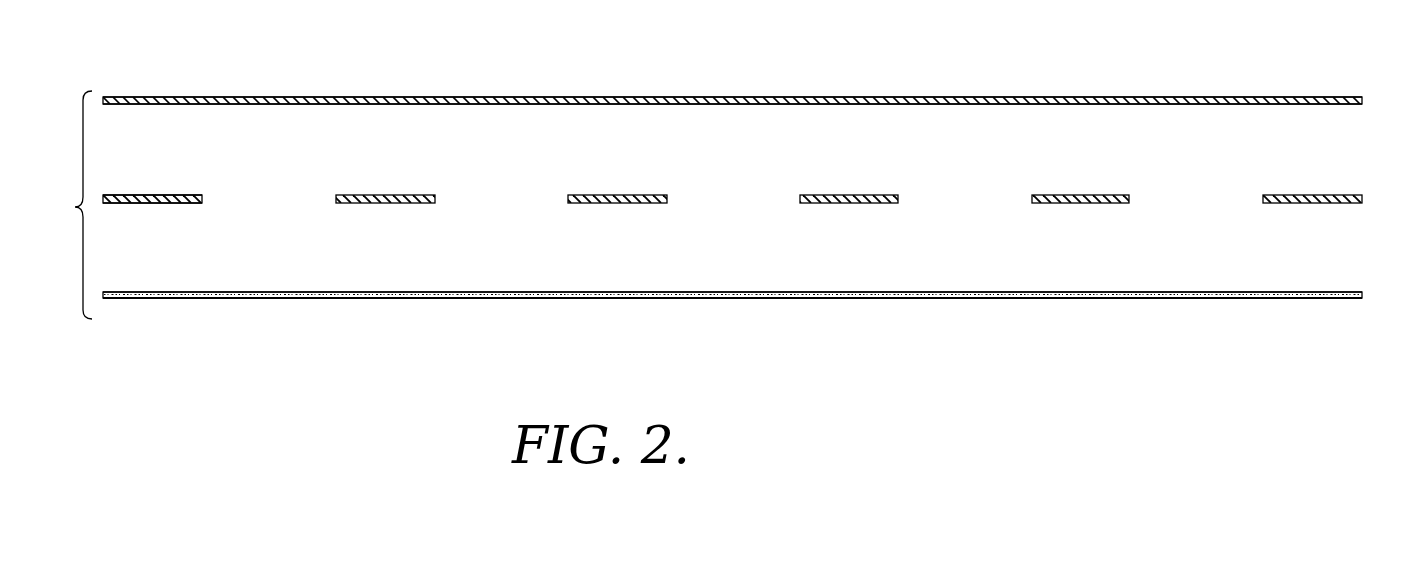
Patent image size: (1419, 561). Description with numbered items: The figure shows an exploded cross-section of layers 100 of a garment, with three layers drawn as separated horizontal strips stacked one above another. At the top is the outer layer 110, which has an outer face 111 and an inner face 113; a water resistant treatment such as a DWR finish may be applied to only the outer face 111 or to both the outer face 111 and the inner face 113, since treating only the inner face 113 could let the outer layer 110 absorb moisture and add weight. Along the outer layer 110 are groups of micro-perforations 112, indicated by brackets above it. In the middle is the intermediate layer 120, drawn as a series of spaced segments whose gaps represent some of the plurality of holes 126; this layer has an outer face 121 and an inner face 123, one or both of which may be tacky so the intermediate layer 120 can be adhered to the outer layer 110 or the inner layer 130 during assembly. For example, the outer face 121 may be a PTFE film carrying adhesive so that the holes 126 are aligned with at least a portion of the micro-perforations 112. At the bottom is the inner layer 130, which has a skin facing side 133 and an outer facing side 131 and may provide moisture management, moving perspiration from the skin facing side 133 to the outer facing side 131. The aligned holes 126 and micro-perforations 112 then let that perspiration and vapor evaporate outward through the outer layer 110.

The cross-section of layers 100 is at (76, 207).
The outer layer 110 is at (1363, 100).
The outer face 111 is at (1294, 96).
The micro-perforations 112 is at (220, 72).
The inner face 113 is at (1279, 107).
The intermediate layer 120 is at (1363, 199).
The outer face 121 is at (144, 195).
The inner face 123 is at (156, 206).
The holes 126 is at (258, 196).
The inner layer 130 is at (1363, 296).
The outer facing side 131 is at (1231, 290).
The skin facing side 133 is at (1181, 300).